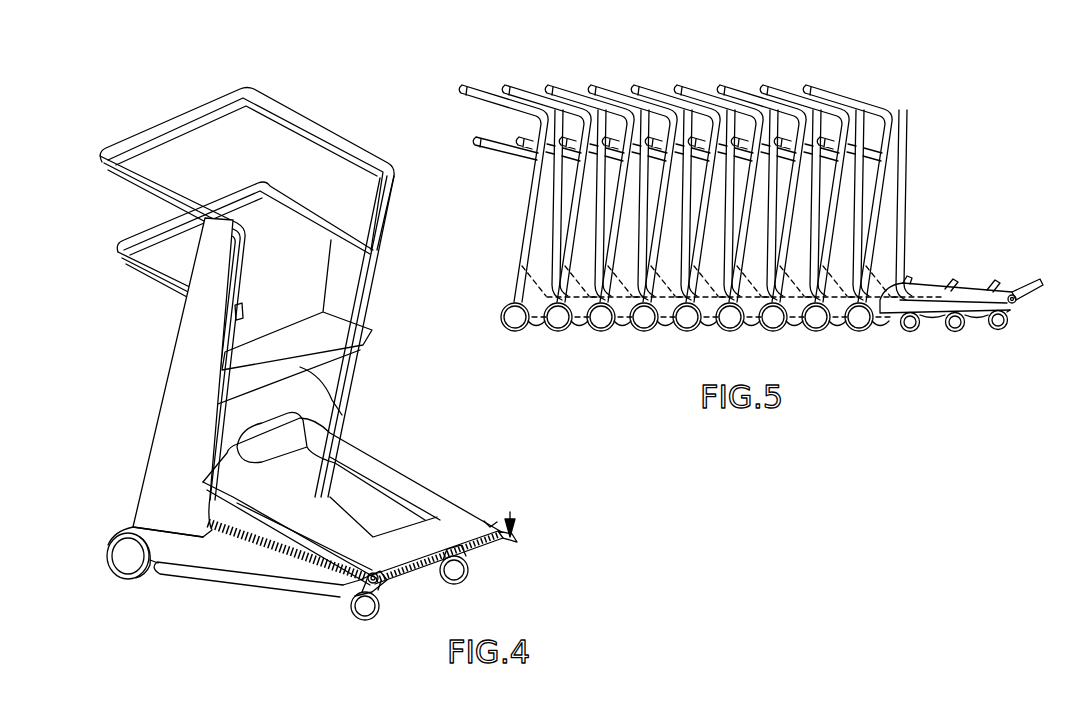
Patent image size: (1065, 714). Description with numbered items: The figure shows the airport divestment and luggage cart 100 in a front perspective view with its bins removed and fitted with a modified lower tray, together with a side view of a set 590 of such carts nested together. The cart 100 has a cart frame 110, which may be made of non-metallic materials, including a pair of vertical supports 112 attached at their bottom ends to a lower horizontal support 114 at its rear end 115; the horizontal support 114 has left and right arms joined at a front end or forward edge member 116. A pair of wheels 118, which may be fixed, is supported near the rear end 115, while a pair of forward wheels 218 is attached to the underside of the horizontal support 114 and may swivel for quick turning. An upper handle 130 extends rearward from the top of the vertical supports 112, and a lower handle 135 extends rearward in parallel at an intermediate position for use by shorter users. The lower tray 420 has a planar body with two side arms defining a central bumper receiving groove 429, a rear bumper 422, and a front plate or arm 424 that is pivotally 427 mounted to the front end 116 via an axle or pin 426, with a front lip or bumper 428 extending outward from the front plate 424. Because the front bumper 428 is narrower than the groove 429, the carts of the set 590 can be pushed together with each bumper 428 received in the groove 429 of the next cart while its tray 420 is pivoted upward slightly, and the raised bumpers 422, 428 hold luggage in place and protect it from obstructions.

In FIG. 4, the airport divestment and luggage cart 100 is at (138, 84).
In FIG. 5, the airport divestment and luggage cart 100 is at (434, 74).
In FIG. 4, the cart frame 110 is at (170, 349).
In FIG. 4, the vertical supports 112 is at (373, 274).
In FIG. 4, the lower horizontal support 114 is at (253, 567).
In FIG. 4, the rear end of horizontal support 115 is at (172, 557).
In FIG. 4, the front end or forward edge member 116 is at (367, 579).
In FIG. 4, the wheels 118 is at (127, 583).
In FIG. 4, the upper handle 130 is at (94, 175).
In FIG. 4, the lower handle 135 is at (106, 269).
In FIG. 4, the forward wheels 218 is at (363, 623).
In FIG. 4, the lower tray 420 is at (456, 468).
In FIG. 4, the rear bumper 422 is at (340, 395).
In FIG. 4, the front plate or arm 424 is at (483, 512).
In FIG. 4, the axle or pin 426 is at (503, 537).
In FIG. 4, the pivotal mounting 427 is at (497, 507).
In FIG. 4, the front lip or bumper 428 is at (473, 553).
In FIG. 4, the central opening or bumper receiving groove 429 is at (373, 497).
In FIG. 5, the set of nested carts 590 is at (950, 68).